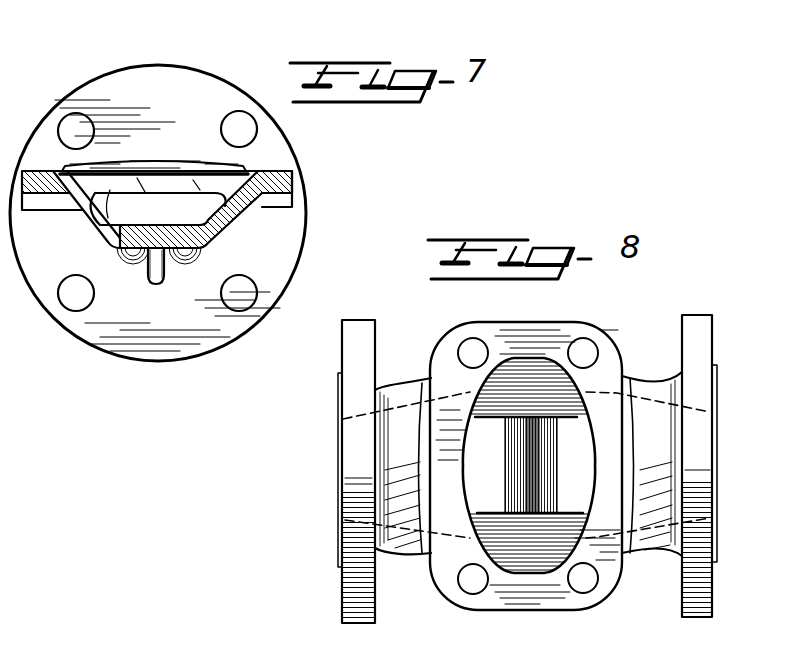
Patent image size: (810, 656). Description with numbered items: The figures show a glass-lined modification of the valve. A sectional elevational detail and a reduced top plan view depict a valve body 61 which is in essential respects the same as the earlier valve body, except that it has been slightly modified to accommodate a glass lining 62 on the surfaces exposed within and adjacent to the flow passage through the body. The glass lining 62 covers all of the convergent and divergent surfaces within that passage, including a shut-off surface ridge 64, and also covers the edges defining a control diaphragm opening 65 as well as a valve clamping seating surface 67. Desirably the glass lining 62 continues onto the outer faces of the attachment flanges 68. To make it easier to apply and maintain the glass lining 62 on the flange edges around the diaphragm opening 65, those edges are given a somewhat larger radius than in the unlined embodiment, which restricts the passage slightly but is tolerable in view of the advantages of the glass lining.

In FIG. 7, the valve body 61 is at (238, 222).
In FIG. 8, the valve body 61 is at (413, 553).
In FIG. 7, the glass lining 62 is at (128, 224).
In FIG. 8, the glass lining 62 is at (342, 397).
In FIG. 7, the shut-off surface ridge 64 is at (148, 240).
In FIG. 8, the shut-off surface ridge 64 is at (533, 468).
In FIG. 7, the control diaphragm opening 65 is at (138, 167).
In FIG. 7, the valve clamping seating surface 67 is at (164, 170).
In FIG. 8, the valve clamping seating surface 67 is at (450, 448).
In FIG. 7, the attachment flanges 68 is at (293, 228).
In FIG. 8, the attachment flanges 68 is at (358, 327).